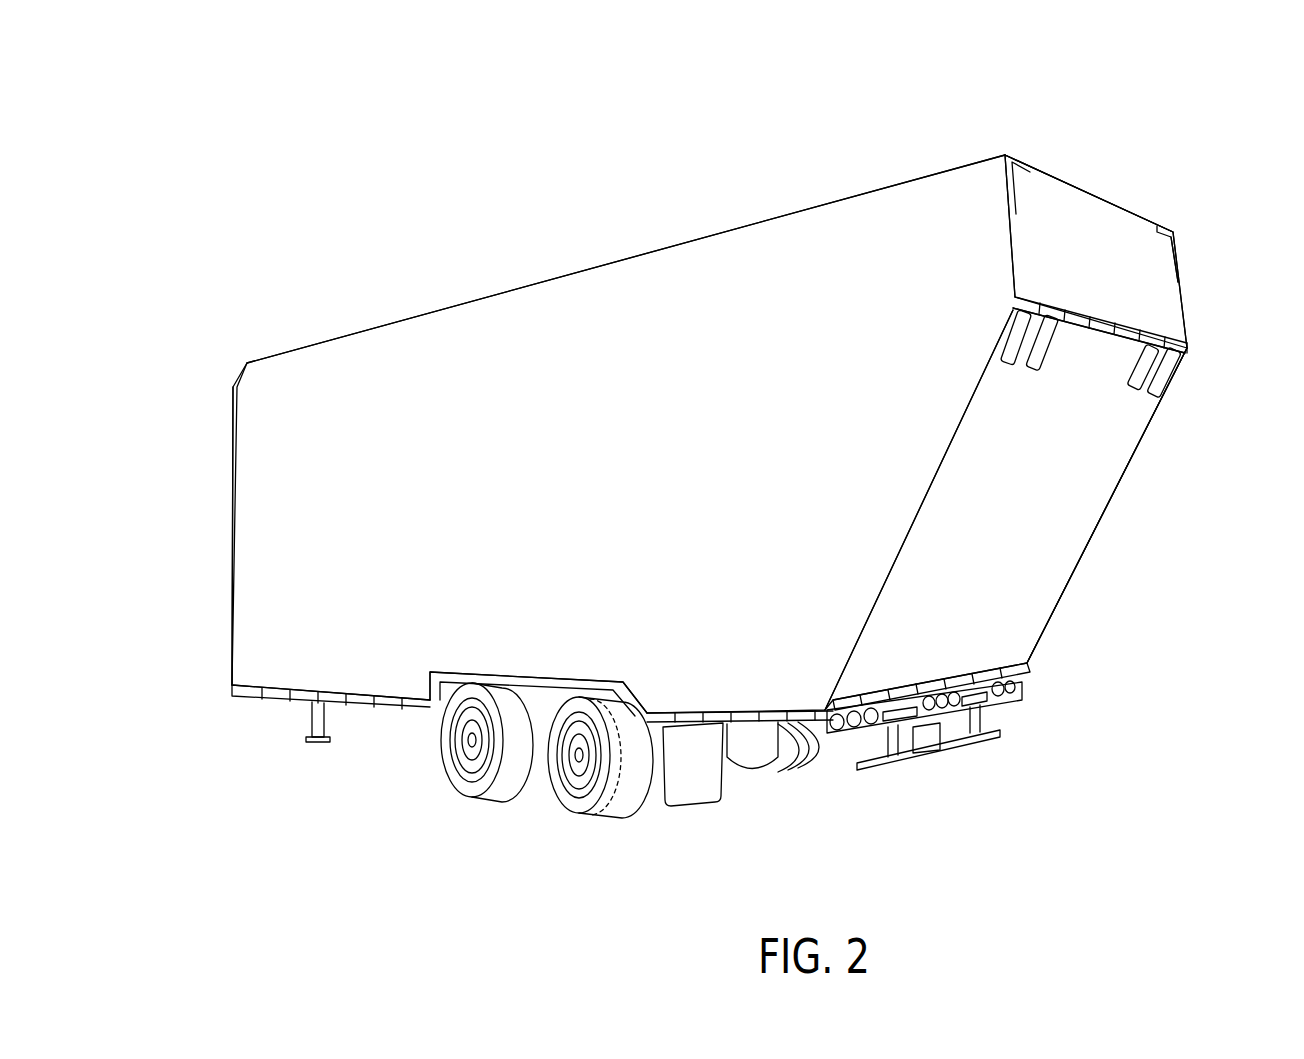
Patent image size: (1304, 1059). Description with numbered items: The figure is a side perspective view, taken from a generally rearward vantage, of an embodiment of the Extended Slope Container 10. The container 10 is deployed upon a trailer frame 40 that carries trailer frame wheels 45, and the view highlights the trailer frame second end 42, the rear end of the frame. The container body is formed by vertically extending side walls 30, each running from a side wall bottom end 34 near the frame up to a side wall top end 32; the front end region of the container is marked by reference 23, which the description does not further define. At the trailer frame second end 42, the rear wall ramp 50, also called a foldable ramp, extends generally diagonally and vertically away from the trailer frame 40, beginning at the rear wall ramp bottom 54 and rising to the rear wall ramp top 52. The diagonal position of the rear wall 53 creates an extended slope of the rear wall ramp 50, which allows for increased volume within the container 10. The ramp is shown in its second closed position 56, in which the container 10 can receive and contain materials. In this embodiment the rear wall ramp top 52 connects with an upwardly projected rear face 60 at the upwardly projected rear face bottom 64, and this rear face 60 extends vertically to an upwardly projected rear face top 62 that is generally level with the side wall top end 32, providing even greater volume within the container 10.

The Extended Slope Container 10 is at (352, 137).
The front end 23 is at (230, 366).
The side walls 30 is at (532, 326).
The side wall top end 32 is at (704, 230).
The side wall bottom end 34 is at (354, 708).
The trailer frame 40 is at (777, 743).
The trailer frame second end 42 is at (1006, 708).
The trailer frame wheels 45 is at (596, 823).
The rear wall ramp 50 is at (1070, 543).
The rear wall ramp top 52 is at (1195, 348).
The rear wall 53 is at (947, 417).
The rear wall ramp bottom 54 is at (1040, 681).
The second closed position 56 is at (1116, 451).
The upwardly projected rear face 60 is at (1104, 215).
The upwardly projected rear face top 62 is at (1074, 157).
The upwardly projected rear face bottom 64 is at (1150, 322).